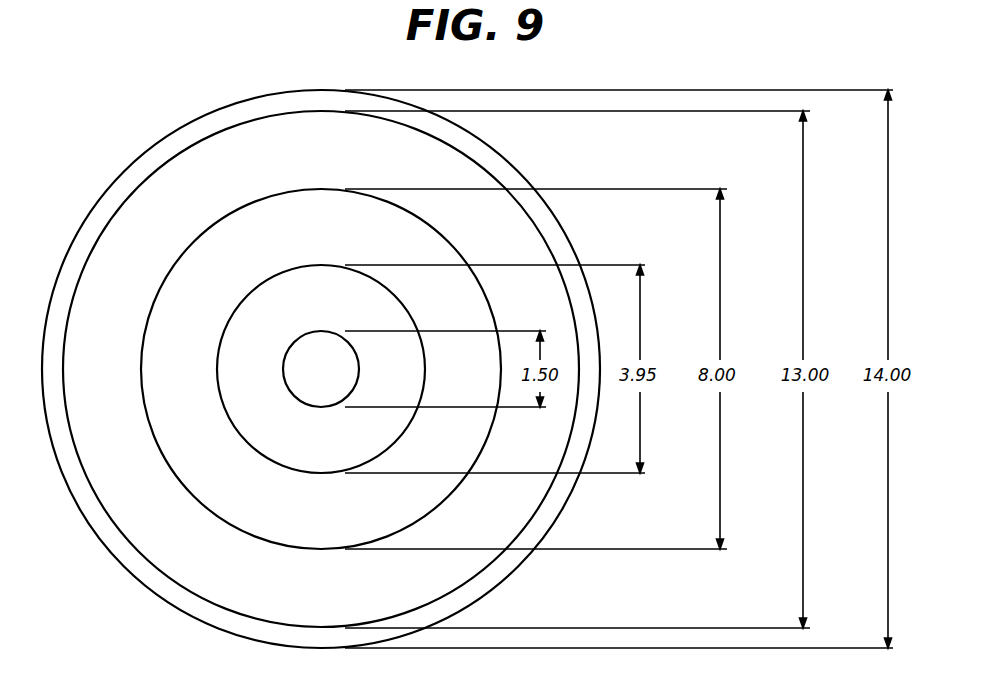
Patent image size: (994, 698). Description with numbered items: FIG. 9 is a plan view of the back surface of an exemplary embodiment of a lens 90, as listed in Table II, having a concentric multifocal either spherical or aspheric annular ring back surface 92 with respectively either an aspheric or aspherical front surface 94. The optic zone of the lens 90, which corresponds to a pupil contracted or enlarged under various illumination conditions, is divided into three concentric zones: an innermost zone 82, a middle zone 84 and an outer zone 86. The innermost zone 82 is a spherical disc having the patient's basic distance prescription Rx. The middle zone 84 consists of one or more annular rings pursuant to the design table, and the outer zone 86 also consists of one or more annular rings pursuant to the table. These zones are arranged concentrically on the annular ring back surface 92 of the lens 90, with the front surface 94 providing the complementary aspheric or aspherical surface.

The innermost zone 82 is at (318, 407).
The middle zone 84 is at (321, 369).
The outer zone 86 is at (321, 369).
The lens 90 is at (110, 162).
The annular ring back surface 92 is at (110, 287).
The front surface 94 is at (430, 168).